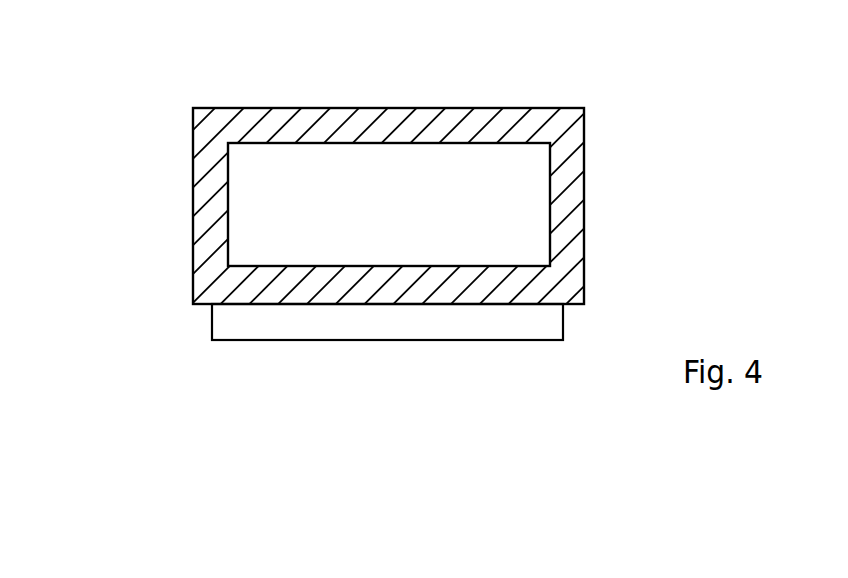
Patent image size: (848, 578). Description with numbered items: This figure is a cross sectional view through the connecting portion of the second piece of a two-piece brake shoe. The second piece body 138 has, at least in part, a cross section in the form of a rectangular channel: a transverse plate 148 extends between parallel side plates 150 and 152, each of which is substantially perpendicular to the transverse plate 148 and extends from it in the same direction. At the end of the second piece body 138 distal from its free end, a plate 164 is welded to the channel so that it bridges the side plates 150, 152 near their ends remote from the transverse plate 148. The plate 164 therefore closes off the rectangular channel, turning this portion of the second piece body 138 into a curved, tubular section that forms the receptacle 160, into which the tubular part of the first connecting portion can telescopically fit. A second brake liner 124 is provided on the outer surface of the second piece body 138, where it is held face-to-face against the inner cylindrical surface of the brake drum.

The second brake liner 124 is at (498, 332).
The second piece body 138 is at (588, 252).
The transverse plate 148 is at (372, 280).
The side plate 150 is at (205, 218).
The side plate 152 is at (575, 192).
The receptacle 160 is at (297, 190).
The plate 164 is at (452, 120).